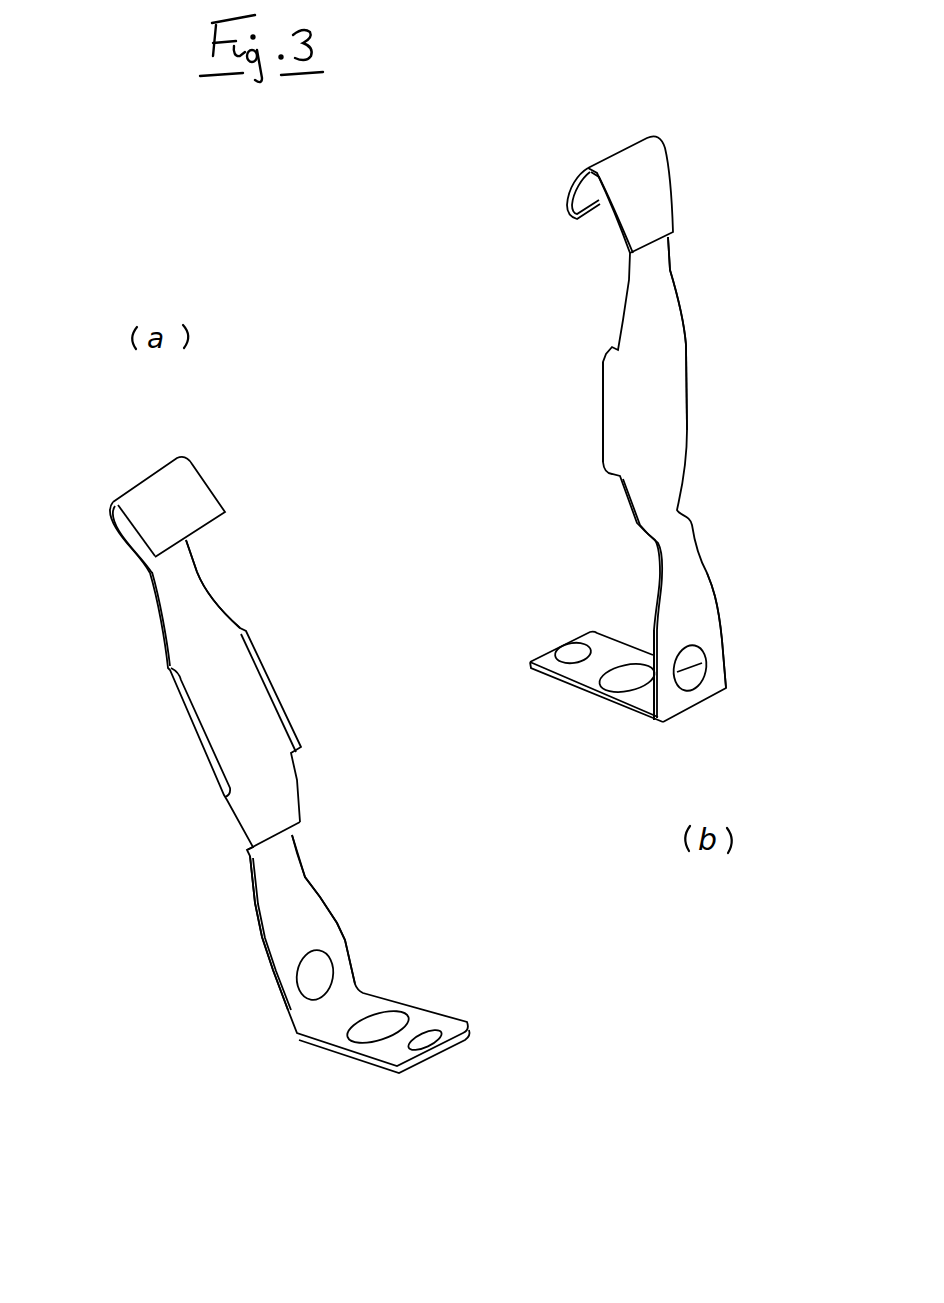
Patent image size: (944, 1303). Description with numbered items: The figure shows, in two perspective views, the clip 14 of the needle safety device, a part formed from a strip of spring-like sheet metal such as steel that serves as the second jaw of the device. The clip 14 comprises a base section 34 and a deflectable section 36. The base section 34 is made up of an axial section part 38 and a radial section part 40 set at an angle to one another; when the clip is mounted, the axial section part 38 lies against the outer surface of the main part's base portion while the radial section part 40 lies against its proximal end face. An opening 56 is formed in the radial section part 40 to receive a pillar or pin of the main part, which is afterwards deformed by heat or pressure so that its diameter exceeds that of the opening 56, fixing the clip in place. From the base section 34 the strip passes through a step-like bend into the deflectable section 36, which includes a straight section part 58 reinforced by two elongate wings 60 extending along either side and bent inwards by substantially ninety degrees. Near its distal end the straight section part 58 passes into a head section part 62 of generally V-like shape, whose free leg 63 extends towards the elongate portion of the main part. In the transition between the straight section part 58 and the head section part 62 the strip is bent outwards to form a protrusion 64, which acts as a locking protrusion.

The clip 14 is at (192, 920).
The base section 34 is at (283, 1007).
The deflectable section 36 is at (233, 613).
The axial section part 38 is at (350, 943).
The radial section part 40 is at (428, 1010).
The opening 56 is at (432, 1033).
The straight section part 58 is at (180, 693).
The elongate wings 60 is at (273, 680).
The head section part 62 is at (110, 522).
The free leg 63 is at (217, 493).
The protrusion 64 is at (140, 558).